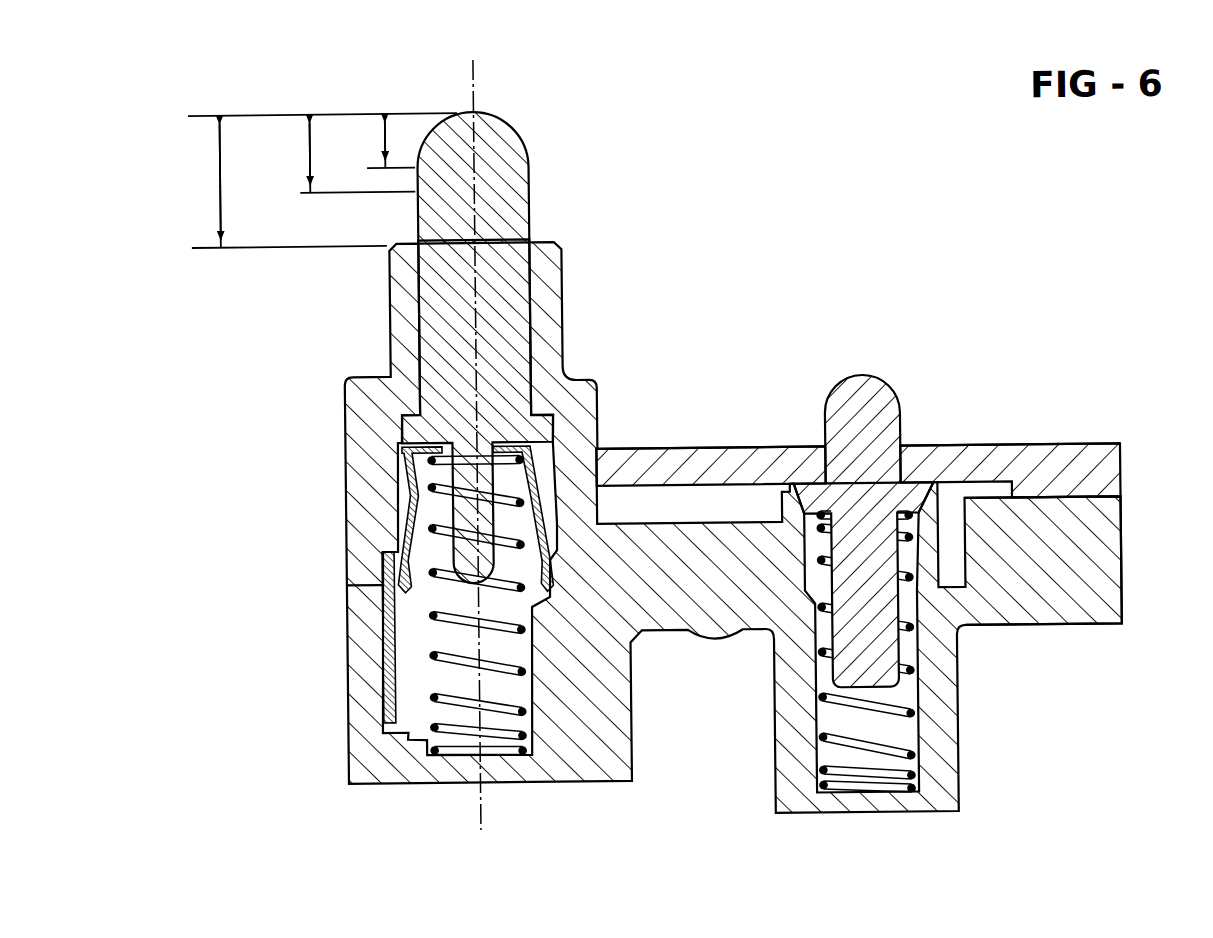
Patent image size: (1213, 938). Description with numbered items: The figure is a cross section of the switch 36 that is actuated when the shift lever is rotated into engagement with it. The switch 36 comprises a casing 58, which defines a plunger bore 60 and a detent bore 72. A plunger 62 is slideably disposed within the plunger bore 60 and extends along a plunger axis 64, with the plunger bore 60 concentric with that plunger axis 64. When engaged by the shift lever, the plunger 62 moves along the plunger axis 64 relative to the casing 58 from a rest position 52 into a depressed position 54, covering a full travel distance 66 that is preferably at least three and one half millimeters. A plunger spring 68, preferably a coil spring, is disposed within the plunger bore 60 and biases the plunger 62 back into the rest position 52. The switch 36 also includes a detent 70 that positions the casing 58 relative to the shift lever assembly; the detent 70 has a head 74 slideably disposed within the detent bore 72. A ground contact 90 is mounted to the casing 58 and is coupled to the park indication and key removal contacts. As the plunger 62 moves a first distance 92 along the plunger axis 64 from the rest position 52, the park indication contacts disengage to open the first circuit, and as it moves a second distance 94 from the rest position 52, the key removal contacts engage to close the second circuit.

The switch 36 is at (912, 234).
The rest position 52 is at (286, 113).
The depressed position 54 is at (304, 248).
The casing 58 is at (1107, 550).
The plunger bore 60 is at (400, 486).
The plunger 62 is at (533, 196).
The plunger axis 64 is at (478, 802).
The full travel distance 66 is at (221, 179).
The plunger spring 68 is at (426, 692).
The detent 70 is at (906, 431).
The detent bore 72 is at (912, 694).
The head 74 is at (866, 379).
The ground contact 90 is at (382, 612).
The first distance 92 is at (386, 140).
The second distance 94 is at (311, 147).